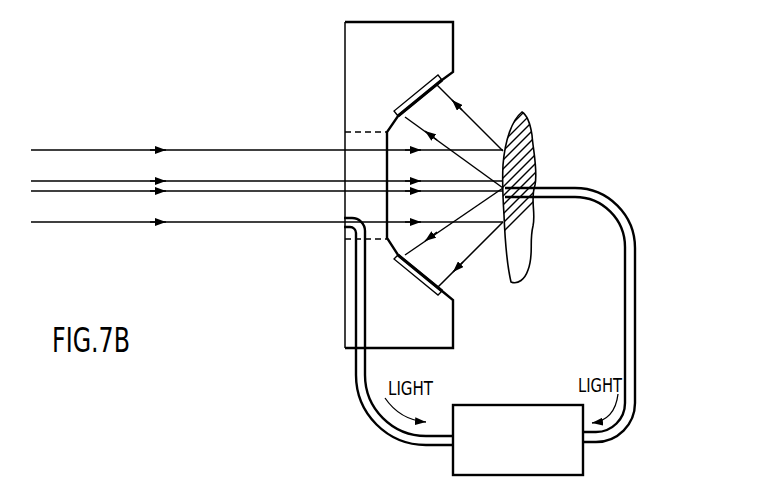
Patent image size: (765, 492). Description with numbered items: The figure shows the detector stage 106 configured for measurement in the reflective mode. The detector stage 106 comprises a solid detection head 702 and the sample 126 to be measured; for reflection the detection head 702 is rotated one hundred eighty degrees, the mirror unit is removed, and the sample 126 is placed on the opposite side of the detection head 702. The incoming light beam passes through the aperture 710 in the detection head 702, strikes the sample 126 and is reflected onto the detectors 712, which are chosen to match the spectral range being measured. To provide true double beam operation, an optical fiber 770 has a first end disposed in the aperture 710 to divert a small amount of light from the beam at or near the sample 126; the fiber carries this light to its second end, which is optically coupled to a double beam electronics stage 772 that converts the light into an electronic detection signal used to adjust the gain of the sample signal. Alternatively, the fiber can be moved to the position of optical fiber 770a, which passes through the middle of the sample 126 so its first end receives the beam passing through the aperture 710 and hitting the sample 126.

The detector stage 106 is at (528, 41).
The detection head 702 is at (345, 52).
The aperture 710 is at (355, 143).
The detectors 712 is at (418, 92).
The sample 126 is at (535, 135).
The optical fiber 770 is at (368, 408).
The optical fiber 770a is at (625, 293).
The double beam electronics stage 772 is at (502, 405).